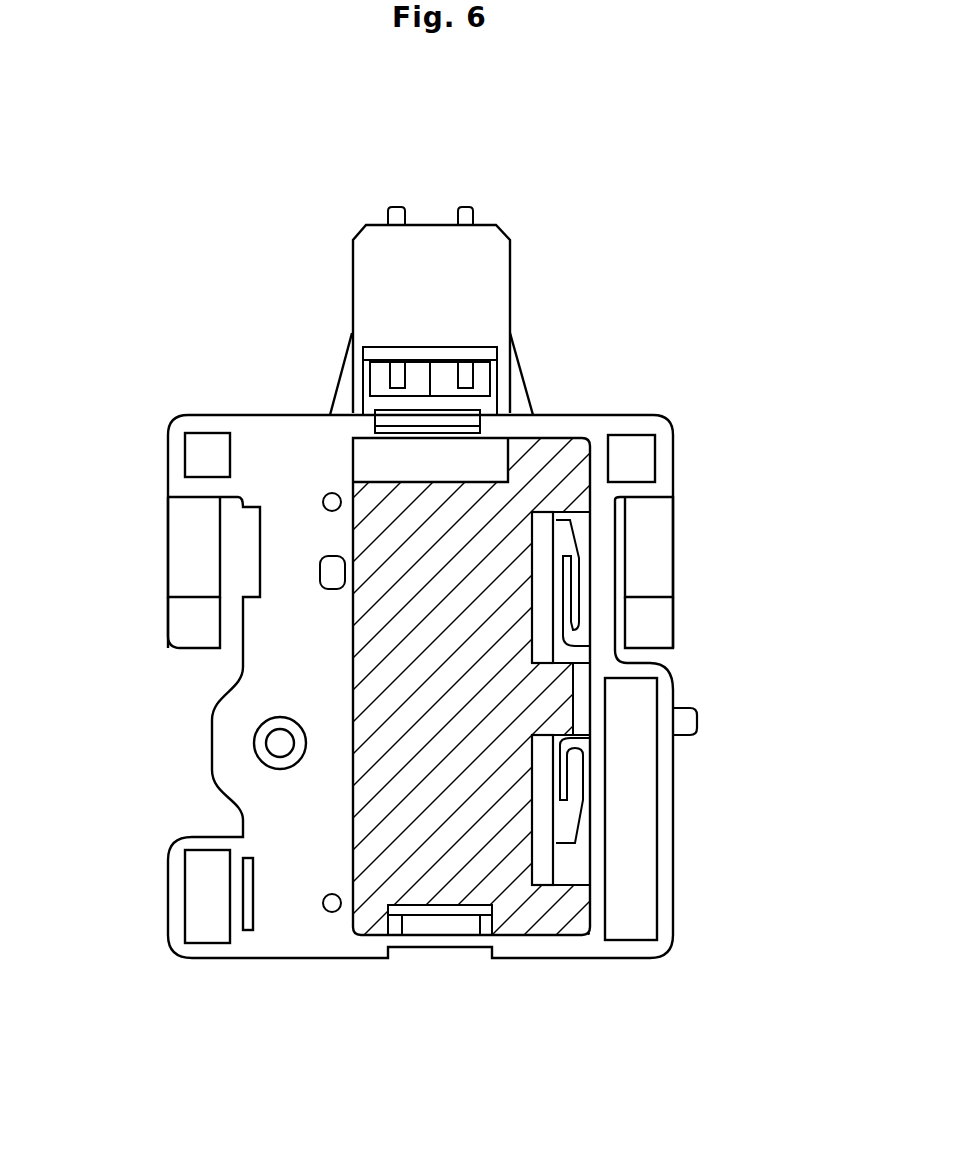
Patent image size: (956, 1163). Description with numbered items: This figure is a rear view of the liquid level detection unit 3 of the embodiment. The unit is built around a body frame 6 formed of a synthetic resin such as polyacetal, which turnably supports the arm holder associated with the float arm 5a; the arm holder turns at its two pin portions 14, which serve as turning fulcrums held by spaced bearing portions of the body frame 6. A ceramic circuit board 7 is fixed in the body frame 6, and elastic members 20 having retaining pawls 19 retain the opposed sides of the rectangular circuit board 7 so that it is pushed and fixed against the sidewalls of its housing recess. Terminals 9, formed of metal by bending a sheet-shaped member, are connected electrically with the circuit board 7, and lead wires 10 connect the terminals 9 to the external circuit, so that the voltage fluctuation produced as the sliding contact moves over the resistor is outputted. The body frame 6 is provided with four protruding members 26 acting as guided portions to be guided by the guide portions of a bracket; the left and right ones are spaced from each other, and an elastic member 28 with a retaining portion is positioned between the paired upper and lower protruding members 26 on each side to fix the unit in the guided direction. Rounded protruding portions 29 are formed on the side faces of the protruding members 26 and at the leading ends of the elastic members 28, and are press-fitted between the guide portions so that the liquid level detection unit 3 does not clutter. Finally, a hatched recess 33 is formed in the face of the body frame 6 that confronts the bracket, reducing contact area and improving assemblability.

The liquid level detection unit 3 is at (278, 397).
The float arm 5a is at (682, 727).
The body frame 6 is at (557, 430).
The circuit board 7 is at (545, 642).
The terminals 9 is at (385, 378).
The lead wires 10 is at (392, 214).
The pin portions 14 is at (262, 742).
The retaining pawls 19 is at (567, 543).
The elastic members 20 is at (573, 583).
The protruding members 26 is at (188, 487).
The elastic member 28 is at (188, 530).
The rounded protruding portions 29 is at (168, 622).
The recess 33 is at (550, 482).